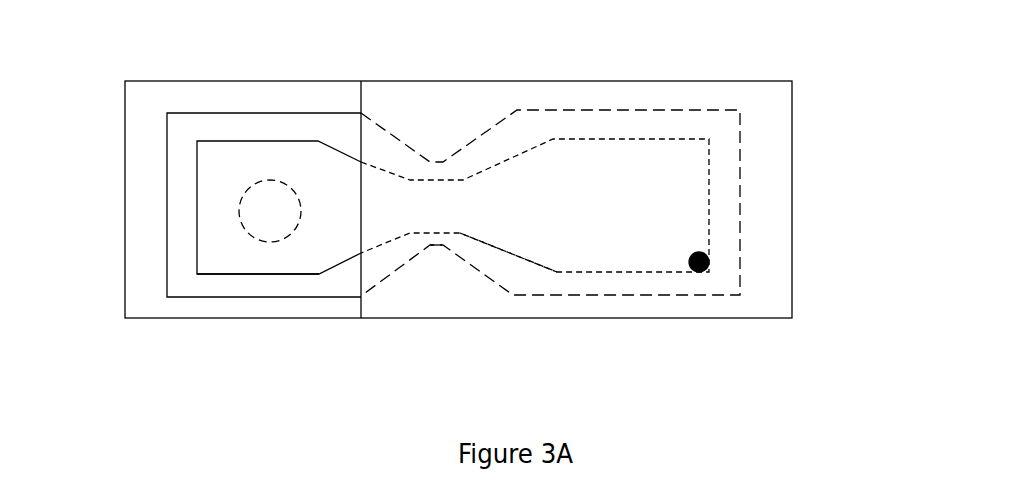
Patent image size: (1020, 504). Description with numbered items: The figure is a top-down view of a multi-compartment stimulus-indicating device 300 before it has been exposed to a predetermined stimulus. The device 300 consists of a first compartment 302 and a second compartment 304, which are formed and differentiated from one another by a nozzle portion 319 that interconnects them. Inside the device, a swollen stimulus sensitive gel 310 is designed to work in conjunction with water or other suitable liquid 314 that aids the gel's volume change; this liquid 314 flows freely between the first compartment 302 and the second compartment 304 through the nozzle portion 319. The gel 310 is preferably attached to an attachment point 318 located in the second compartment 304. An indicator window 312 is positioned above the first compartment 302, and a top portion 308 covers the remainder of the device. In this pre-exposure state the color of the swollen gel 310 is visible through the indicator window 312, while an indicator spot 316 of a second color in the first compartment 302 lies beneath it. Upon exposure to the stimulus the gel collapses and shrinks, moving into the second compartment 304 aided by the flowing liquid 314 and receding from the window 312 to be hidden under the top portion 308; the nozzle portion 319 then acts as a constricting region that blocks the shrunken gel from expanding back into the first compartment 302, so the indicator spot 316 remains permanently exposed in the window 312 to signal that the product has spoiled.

The stimulus-indicating device 300 is at (98, 143).
The first compartment 302 is at (172, 92).
The second compartment 304 is at (735, 133).
The top portion 308 is at (462, 110).
The swollen stimulus sensitive gel 310 is at (210, 267).
The indicator window 312 is at (220, 112).
The water or other suitable liquid 314 is at (518, 243).
The indicator spot 316 is at (238, 211).
The attachment point 318 is at (700, 272).
The nozzle portion 319 is at (438, 243).